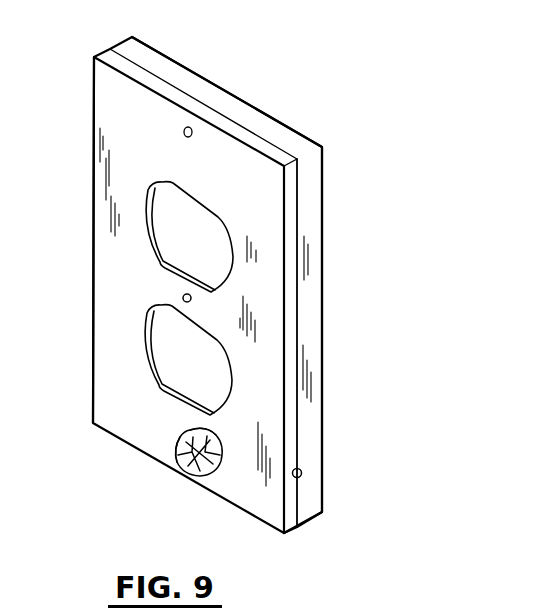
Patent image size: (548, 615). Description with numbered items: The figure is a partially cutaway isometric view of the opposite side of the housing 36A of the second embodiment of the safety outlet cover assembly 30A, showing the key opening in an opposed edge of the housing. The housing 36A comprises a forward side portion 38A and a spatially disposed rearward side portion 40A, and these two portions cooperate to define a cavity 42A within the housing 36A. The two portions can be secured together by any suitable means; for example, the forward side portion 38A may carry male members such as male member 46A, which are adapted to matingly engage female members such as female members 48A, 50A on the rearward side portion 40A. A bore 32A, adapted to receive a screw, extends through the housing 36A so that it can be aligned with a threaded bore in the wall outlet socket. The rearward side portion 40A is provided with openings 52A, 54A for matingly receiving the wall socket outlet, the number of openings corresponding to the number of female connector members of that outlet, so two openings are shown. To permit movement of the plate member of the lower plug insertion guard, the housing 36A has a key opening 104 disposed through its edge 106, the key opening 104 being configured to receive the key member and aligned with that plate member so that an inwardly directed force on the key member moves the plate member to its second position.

The safety outlet cover assembly 30A is at (294, 53).
The housing 36A is at (336, 180).
The forward side portion 38A is at (303, 128).
The rearward side portion 40A is at (93, 133).
The female member 48A is at (191, 127).
The opening 52A is at (158, 215).
The bore 32A is at (183, 297).
The opening 54A is at (227, 360).
The cavity 42A is at (193, 474).
The male member 46A is at (193, 430).
The female member 50A is at (176, 448).
The key opening 104 is at (302, 470).
The edge 106 is at (308, 482).